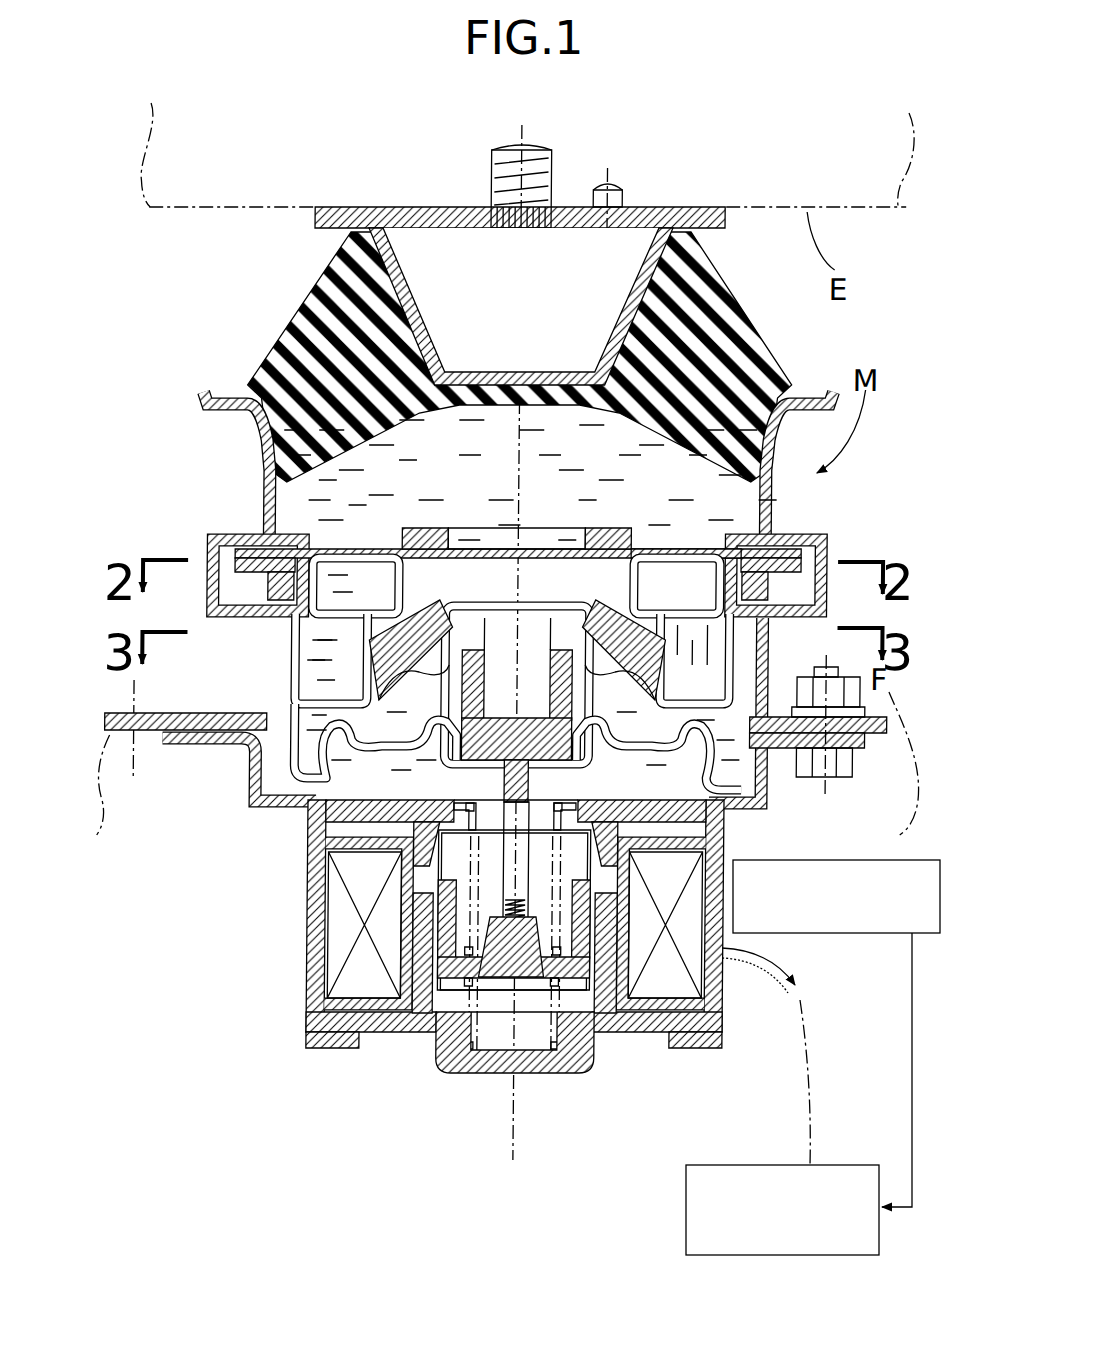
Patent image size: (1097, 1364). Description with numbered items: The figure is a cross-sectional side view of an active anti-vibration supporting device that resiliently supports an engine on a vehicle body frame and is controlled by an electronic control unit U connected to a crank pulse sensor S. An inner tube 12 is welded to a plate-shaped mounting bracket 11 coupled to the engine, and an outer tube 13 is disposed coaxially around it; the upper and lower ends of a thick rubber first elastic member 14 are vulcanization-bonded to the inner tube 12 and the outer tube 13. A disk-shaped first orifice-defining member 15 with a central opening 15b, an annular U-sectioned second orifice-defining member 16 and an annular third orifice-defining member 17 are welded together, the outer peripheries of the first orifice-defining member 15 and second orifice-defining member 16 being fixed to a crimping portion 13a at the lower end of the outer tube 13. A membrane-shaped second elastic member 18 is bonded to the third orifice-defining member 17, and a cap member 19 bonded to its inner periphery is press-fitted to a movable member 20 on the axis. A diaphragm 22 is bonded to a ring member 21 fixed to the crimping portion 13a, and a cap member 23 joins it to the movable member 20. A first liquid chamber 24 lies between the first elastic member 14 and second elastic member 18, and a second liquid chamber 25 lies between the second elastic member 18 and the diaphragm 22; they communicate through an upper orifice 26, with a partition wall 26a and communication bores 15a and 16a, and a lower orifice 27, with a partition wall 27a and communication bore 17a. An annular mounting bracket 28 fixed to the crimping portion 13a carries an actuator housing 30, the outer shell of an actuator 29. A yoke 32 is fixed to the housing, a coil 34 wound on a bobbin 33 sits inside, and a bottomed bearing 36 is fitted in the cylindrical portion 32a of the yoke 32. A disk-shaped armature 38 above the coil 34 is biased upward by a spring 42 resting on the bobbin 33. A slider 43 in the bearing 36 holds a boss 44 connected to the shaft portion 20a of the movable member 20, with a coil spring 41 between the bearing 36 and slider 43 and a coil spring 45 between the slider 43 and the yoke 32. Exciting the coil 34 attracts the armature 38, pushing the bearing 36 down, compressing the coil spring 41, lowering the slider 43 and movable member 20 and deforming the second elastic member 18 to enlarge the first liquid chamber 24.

The mounting bracket 11 is at (543, 201).
The inner tube 12 is at (520, 306).
The outer tube 13 is at (480, 463).
The crimping portion 13a is at (455, 555).
The first elastic member 14 is at (502, 357).
The first orifice-defining member 15 is at (518, 494).
The communication bore 15a is at (686, 516).
The opening 15b is at (494, 512).
The second orifice-defining member 16 is at (356, 559).
The communication bore 16a is at (677, 586).
The third orifice-defining member 17 is at (341, 637).
The communication bore 17a is at (695, 659).
The second elastic member 18 is at (474, 665).
The cap member 19 is at (518, 667).
The movable member 20 is at (457, 849).
The shaft portion 20a is at (512, 907).
The ring member 21 is at (477, 581).
The diaphragm 22 is at (375, 744).
The cap member 23 is at (411, 655).
The first liquid chamber 24 is at (530, 480).
The second liquid chamber 25 is at (622, 657).
The upper orifice 26 is at (350, 523).
The partition wall 26a is at (618, 525).
The lower orifice 27 is at (472, 703).
The partition wall 27a is at (798, 710).
The mounting bracket 28 is at (210, 730).
The actuator 29 is at (190, 925).
The actuator housing 30 is at (474, 916).
The yoke 32 is at (500, 1101).
The cylindrical portion 32a is at (663, 923).
The bobbin 33 is at (469, 1011).
The coil 34 is at (313, 923).
The bearing 36 is at (531, 787).
The armature 38 is at (659, 761).
The coil spring 41 is at (546, 800).
The spring 42 is at (428, 911).
The slider 43 is at (377, 925).
The boss 44 is at (513, 1016).
The coil spring 45 is at (551, 949).
The crank pulse sensor S is at (855, 860).
The electronic control unit U is at (848, 1165).